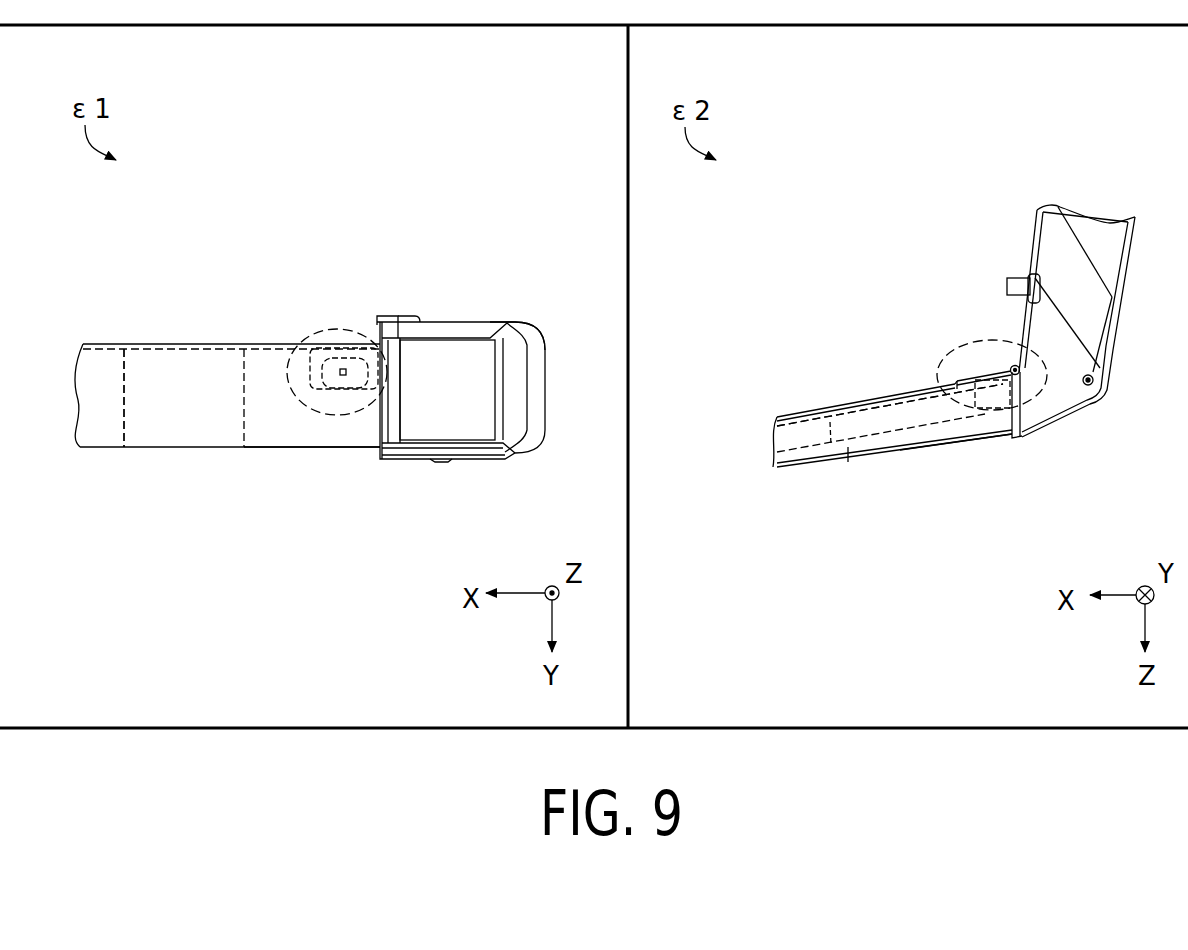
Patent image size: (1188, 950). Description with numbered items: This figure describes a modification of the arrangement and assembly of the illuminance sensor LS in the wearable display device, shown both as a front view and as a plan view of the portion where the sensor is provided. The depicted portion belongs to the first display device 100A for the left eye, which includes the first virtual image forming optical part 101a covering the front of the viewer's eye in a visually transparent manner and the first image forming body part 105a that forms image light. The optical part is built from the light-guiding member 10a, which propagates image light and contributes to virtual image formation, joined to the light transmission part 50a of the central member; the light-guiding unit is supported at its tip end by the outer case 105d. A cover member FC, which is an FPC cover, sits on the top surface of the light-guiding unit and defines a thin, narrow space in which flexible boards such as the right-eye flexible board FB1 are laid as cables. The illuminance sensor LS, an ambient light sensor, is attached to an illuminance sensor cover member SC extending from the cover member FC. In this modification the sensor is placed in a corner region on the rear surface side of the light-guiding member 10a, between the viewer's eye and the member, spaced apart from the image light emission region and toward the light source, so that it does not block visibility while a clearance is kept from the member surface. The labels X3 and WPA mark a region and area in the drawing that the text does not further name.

The light transmission part 50a is at (102, 448).
The first virtual image forming optical part 101a is at (213, 445).
The light-guiding member 10a is at (333, 448).
The first image forming body part 105a is at (445, 466).
The outer case 105d is at (510, 320).
The first display device 100A is at (328, 558).
The cover member FC is at (148, 355).
The region X3 is at (285, 370).
The illuminance sensor cover member SC is at (308, 344).
The illuminance sensor LS is at (343, 364).
The webbing passing area WPA is at (320, 303).
The right-eye flexible board FB1 is at (832, 423).